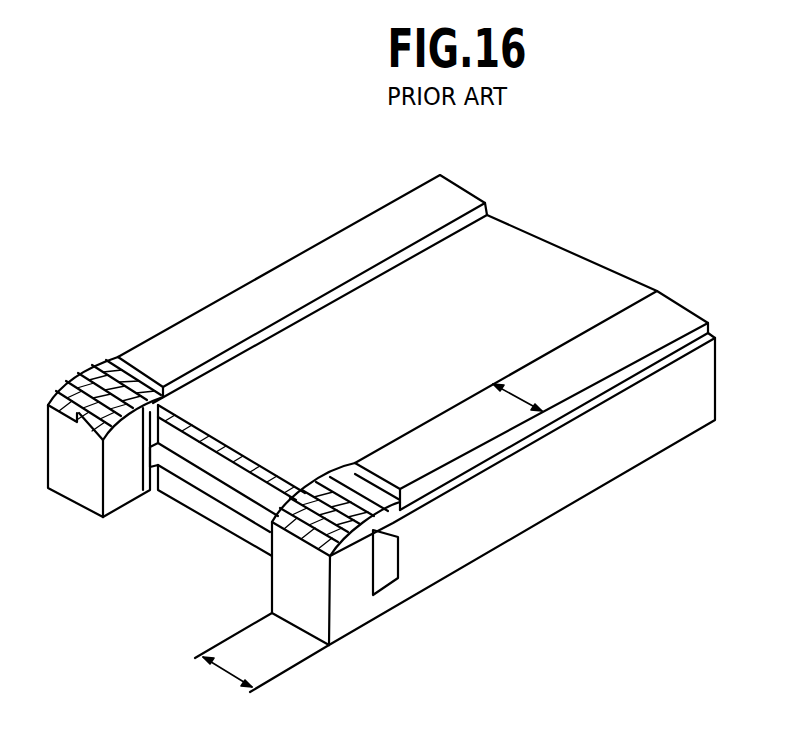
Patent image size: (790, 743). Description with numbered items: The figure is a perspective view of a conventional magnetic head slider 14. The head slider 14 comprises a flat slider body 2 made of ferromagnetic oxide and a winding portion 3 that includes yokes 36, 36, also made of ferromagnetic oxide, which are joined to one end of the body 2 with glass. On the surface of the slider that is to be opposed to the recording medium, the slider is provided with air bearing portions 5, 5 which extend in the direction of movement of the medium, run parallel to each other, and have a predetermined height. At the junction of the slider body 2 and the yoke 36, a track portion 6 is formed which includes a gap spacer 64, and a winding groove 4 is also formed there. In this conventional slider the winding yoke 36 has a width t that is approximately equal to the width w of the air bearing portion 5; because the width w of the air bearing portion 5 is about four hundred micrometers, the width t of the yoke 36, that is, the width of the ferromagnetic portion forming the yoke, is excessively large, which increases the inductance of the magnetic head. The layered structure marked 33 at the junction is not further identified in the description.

The slider body 2 is at (563, 487).
The winding portion 3 is at (262, 585).
The winding groove 4 is at (383, 580).
The air bearing portion 5 is at (265, 276).
The track portion 6 is at (350, 487).
The head slider 14 is at (665, 455).
The thin film layer 33 is at (320, 490).
The yoke 36 is at (128, 492).
The gap spacer 64 is at (118, 388).